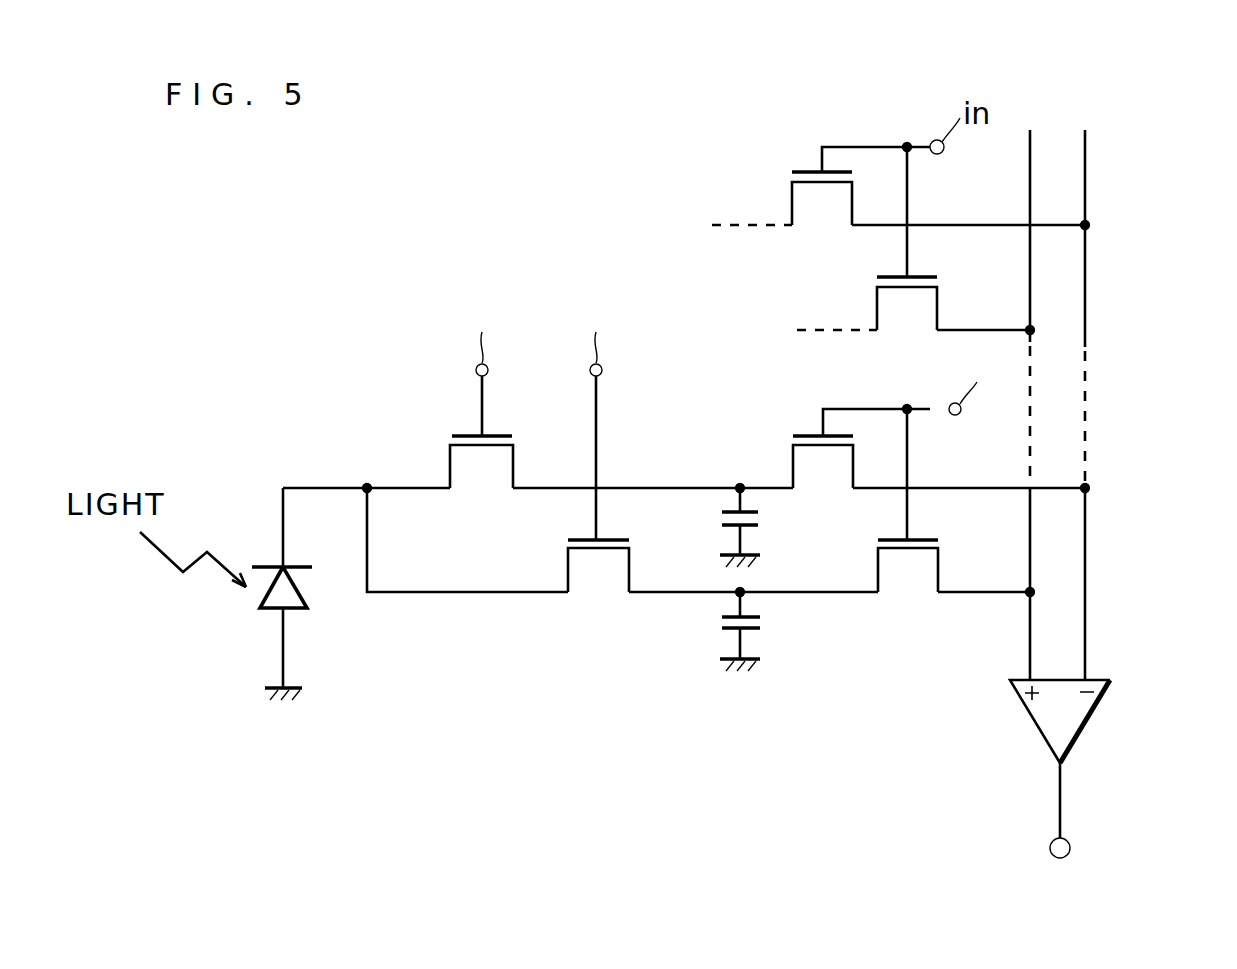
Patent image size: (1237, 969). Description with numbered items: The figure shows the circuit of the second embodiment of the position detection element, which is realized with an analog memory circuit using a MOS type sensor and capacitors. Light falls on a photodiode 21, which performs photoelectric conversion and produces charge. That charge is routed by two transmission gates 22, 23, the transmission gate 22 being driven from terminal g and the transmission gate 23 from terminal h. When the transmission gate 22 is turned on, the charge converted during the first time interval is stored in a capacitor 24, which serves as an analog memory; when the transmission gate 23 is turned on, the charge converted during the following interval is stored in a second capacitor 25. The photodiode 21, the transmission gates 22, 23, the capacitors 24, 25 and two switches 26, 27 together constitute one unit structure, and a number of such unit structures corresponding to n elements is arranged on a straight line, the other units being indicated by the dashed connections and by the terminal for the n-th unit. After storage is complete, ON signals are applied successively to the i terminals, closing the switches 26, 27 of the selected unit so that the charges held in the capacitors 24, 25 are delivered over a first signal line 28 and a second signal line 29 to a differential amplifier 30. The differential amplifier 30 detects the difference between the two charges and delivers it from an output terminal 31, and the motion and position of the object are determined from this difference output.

The photodiode 21 is at (268, 612).
The transmission gate 22 is at (602, 570).
The transmission gate 23 is at (478, 462).
The capacitor 24 is at (763, 620).
The capacitor 25 is at (717, 517).
The switch 26 is at (908, 565).
The switch 27 is at (823, 463).
The first signal line 28 is at (1032, 545).
The second signal line 29 is at (1087, 605).
The differential amplifier 30 is at (1032, 727).
The output terminal 31 is at (1052, 852).